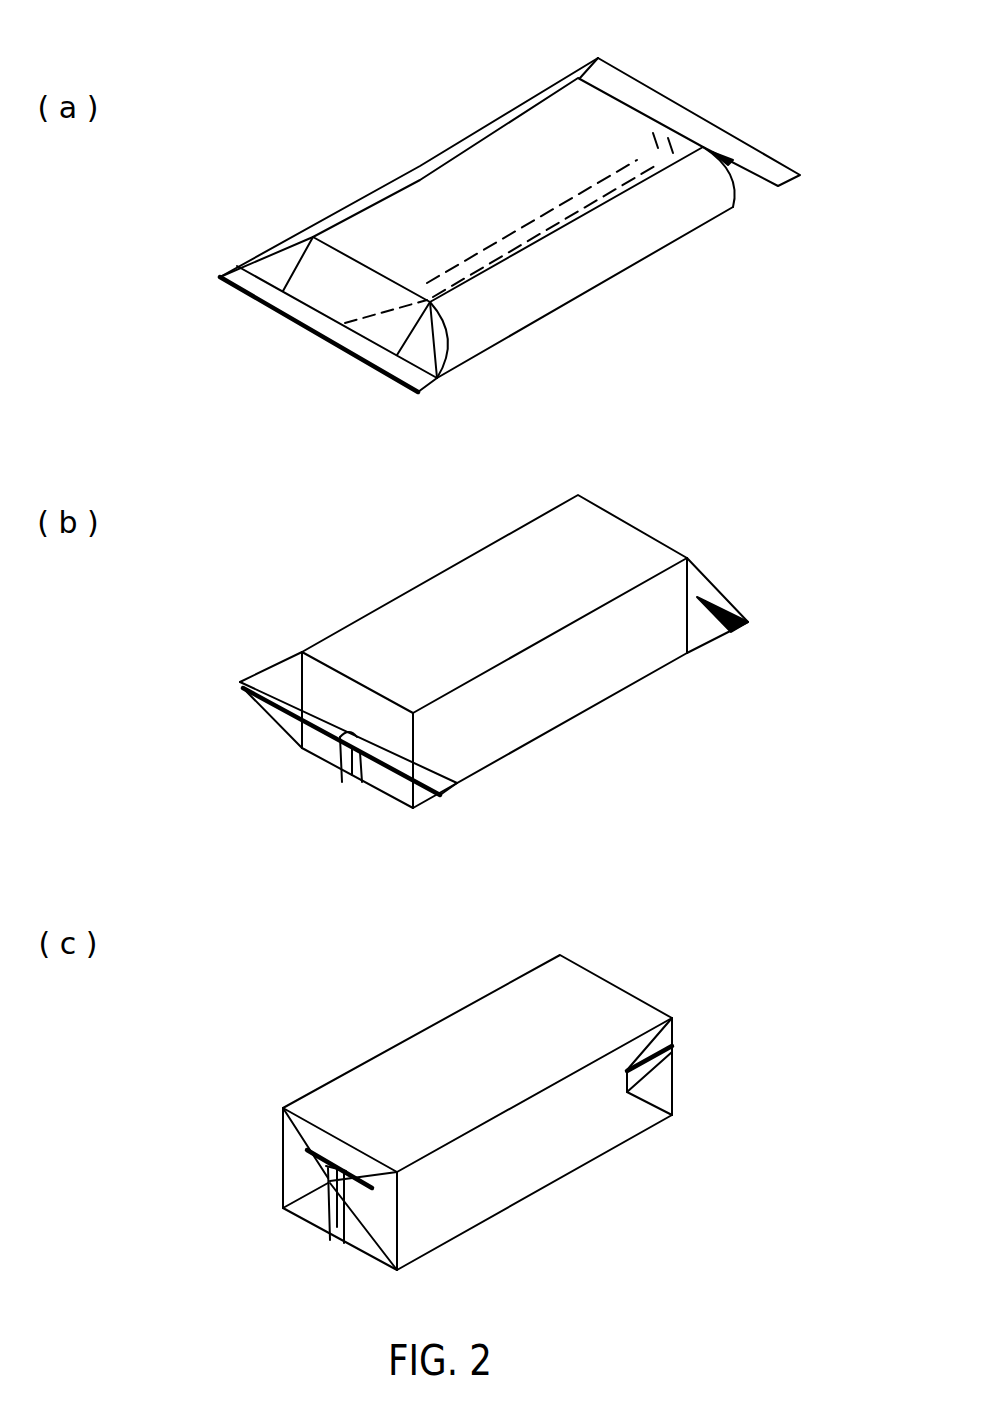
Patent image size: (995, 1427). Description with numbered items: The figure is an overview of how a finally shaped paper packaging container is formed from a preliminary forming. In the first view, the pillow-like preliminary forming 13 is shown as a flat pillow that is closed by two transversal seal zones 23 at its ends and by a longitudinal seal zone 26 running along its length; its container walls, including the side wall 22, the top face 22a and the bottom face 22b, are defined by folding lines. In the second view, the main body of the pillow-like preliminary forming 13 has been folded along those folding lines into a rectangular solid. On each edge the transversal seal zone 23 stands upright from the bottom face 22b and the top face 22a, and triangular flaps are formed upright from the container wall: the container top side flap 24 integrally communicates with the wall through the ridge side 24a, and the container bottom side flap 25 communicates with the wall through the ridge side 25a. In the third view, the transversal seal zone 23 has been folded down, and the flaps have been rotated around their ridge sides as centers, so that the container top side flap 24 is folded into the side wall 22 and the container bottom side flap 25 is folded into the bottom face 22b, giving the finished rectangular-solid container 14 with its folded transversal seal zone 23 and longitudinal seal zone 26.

The pillow-like preliminary forming 13 is at (305, 112).
The container 14 is at (303, 1045).
The side wall 22 is at (455, 220).
The top face 22a is at (700, 140).
The bottom face 22b is at (337, 290).
The transversal seal zone 23 is at (353, 1183).
The container top side flap 24 is at (707, 622).
The ridge side 24a is at (687, 620).
The container bottom side flap 25 is at (280, 670).
The ridge side 25a is at (297, 672).
The longitudinal seal zone 26 is at (520, 232).